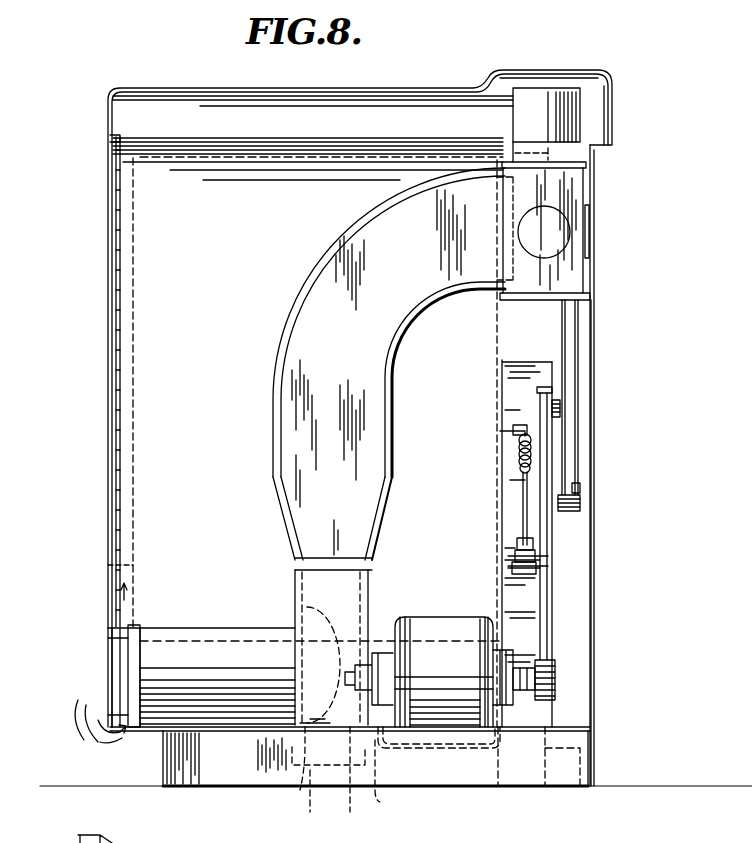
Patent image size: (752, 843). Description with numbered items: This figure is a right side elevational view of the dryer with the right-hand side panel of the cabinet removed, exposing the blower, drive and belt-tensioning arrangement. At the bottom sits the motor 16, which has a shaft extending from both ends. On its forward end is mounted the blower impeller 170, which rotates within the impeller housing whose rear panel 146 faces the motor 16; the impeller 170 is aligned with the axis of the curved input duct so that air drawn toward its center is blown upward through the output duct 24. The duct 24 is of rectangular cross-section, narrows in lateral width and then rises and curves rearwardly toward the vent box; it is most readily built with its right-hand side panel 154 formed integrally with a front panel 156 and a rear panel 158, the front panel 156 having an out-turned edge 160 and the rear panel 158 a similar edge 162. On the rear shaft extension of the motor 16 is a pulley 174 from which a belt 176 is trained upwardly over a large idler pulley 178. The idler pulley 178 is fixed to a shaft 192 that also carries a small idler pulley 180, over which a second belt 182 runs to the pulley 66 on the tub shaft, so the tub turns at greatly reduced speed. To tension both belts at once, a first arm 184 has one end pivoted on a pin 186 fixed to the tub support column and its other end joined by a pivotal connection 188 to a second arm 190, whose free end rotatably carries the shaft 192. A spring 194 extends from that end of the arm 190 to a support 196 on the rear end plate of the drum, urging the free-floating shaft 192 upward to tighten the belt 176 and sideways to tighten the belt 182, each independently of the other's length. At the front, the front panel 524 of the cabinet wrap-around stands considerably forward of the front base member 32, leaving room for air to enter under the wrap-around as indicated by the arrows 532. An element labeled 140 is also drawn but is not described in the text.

The motor 16 is at (462, 678).
The output duct 24 is at (402, 272).
The front base member 32 is at (163, 770).
The pulley 66 is at (574, 360).
The conduit 140 is at (300, 790).
The rear panel of impeller housing 146 is at (375, 790).
The right-hand side panel 154 is at (323, 262).
The front panel 156 is at (300, 290).
The rear panel 158 is at (393, 376).
The out-turned edge 160 is at (294, 303).
The out-turned edge 162 is at (470, 290).
The blower impeller 170 is at (344, 785).
The pulley 174 is at (555, 673).
The belt 176 is at (548, 619).
The large idler pulley 178 is at (552, 560).
The small idler pulley 180 is at (576, 505).
The second belt 182 is at (562, 434).
The first arm 184 is at (518, 556).
The pin 186 is at (515, 568).
The pivotal connection 188 is at (520, 544).
The second arm 190 is at (528, 521).
The shaft 192 is at (580, 490).
The spring 194 is at (518, 449).
The support 196 is at (512, 430).
The front panel 524 is at (110, 620).
The arrows 532 is at (91, 702).